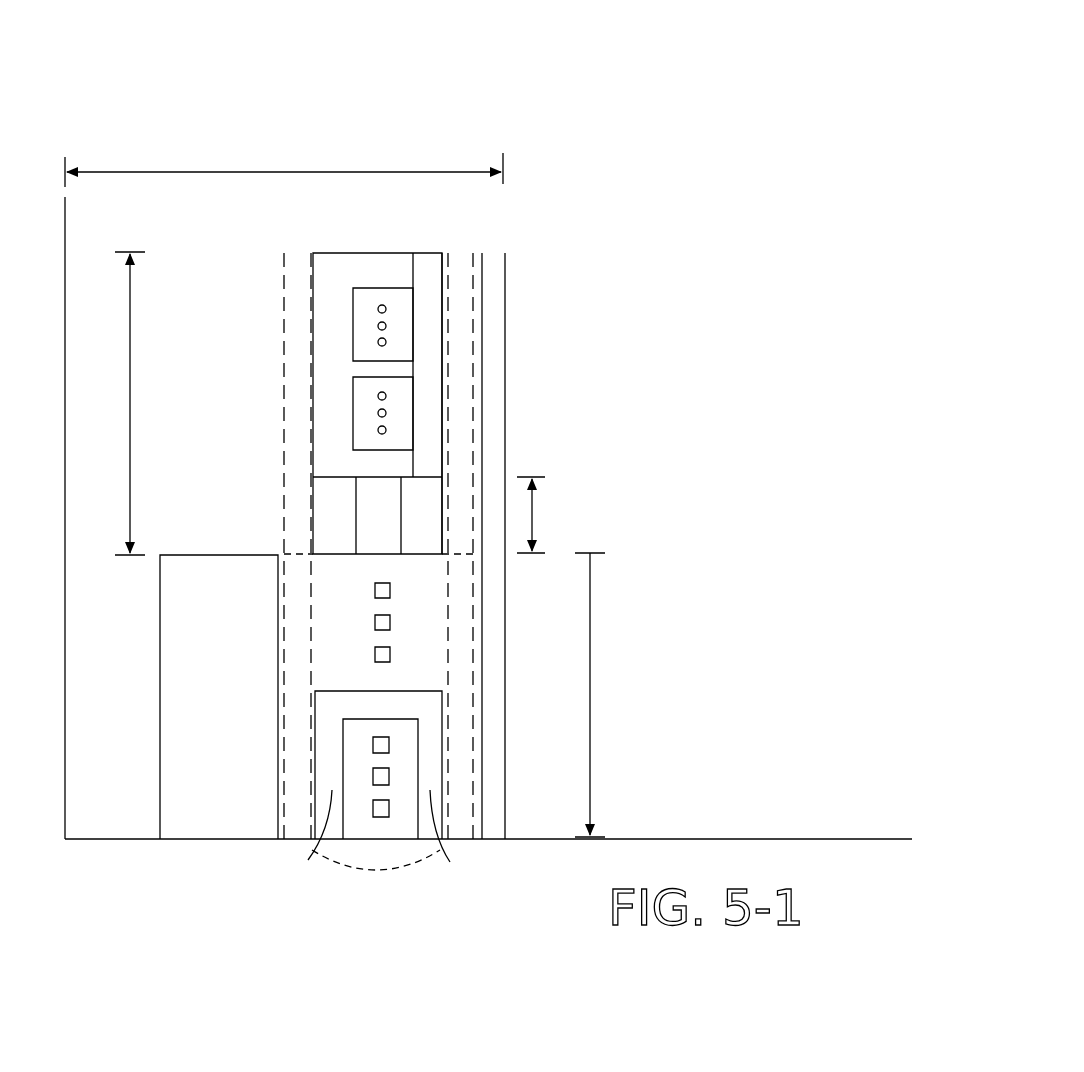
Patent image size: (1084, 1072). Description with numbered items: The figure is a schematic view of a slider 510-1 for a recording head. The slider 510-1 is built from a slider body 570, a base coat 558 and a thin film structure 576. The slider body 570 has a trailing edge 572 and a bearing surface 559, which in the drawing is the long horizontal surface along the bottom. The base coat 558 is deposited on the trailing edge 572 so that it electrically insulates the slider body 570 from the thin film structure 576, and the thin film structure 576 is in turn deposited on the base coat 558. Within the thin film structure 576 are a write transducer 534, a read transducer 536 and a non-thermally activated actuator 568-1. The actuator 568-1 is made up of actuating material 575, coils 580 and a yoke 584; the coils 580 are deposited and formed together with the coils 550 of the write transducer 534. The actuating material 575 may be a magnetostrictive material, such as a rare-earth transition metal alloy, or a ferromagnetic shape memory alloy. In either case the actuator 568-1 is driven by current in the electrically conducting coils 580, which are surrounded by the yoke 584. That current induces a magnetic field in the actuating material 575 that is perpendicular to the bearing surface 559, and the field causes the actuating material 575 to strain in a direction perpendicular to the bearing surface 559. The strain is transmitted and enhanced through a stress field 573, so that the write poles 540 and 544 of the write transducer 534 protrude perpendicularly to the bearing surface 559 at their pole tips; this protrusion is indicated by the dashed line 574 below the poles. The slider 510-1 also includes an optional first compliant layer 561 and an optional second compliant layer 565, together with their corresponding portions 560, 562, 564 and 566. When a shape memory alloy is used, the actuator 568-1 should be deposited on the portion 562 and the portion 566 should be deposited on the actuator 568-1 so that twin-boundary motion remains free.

The slider 510-1 is at (792, 148).
The write transducer 534 is at (590, 752).
The read transducer 536 is at (248, 663).
The write pole 540 is at (291, 836).
The write pole 544 is at (469, 836).
The coils 550 is at (385, 740).
The base coat 558 is at (490, 272).
The bearing surface 559 is at (805, 838).
The portion 560 is at (482, 768).
The first compliant layer 561 is at (473, 365).
The portion 562 is at (460, 256).
The portion 564 is at (297, 818).
The second compliant layer 565 is at (283, 340).
The portion 566 is at (297, 400).
The non-thermally activated actuator 568-1 is at (400, 215).
The slider body 570 is at (803, 526).
The trailing edge 572 is at (505, 815).
The stress field 573 is at (535, 515).
The dashed line 574 is at (368, 868).
The actuating material 575 is at (427, 265).
The thin film structure 576 is at (272, 172).
The coils 580 is at (383, 305).
The yoke 584 is at (384, 267).